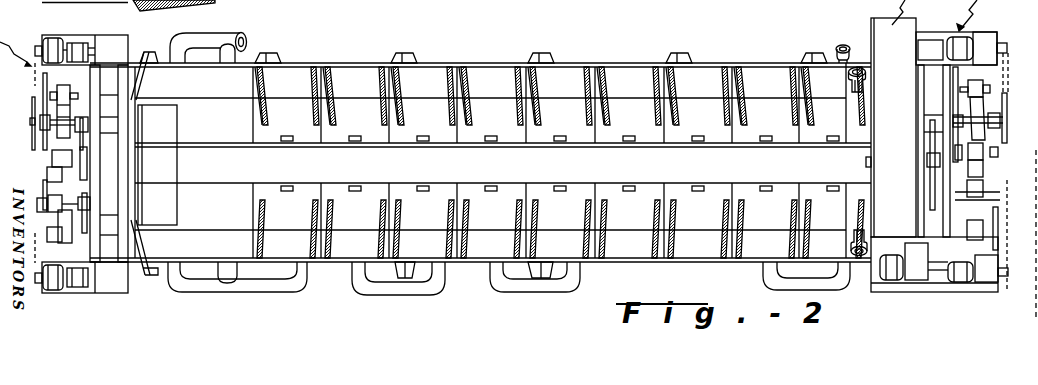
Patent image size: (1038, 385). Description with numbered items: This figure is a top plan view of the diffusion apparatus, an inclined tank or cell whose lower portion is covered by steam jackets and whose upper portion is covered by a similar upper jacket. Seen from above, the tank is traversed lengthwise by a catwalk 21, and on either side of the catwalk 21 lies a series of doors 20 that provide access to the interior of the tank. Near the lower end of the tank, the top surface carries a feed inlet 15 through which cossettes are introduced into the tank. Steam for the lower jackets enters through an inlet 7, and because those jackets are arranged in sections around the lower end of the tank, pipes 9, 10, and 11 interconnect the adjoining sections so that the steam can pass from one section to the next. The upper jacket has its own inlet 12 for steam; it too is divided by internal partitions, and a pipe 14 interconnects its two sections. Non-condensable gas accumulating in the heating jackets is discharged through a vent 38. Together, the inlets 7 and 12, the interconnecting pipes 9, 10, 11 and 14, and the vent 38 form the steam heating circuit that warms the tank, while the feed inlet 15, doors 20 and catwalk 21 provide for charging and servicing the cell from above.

The inlet 7 is at (219, 37).
The pipe 9 is at (243, 287).
The pipe 10 is at (319, 162).
The pipe 11 is at (545, 286).
The inlet 12 is at (851, 40).
The pipe 14 is at (819, 288).
The feed inlet 15 is at (177, 165).
The doors 20 is at (364, 130).
The catwalk 21 is at (445, 175).
The vent 38 is at (845, 83).